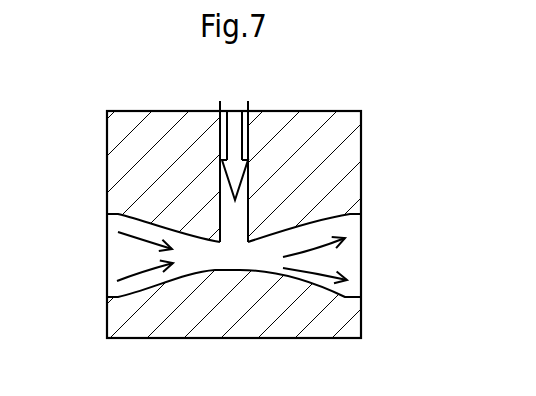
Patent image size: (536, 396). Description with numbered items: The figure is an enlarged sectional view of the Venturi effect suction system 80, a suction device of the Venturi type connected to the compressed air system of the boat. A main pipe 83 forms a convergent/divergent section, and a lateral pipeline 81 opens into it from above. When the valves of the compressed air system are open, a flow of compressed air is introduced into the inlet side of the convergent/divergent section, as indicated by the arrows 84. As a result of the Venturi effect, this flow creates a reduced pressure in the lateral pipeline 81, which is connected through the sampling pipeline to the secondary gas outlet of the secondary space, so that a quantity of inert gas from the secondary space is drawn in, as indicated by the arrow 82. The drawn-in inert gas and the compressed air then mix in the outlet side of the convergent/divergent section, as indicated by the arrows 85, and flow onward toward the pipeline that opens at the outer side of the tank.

The Venturi effect suction system 80 is at (366, 144).
The lateral pipeline 81 is at (229, 200).
The arrow indicating drawn-in inert gas 82 is at (249, 124).
The main pipe 83 is at (204, 268).
The arrows indicating compressed air inflow 84 is at (143, 268).
The arrows indicating mixed outlet flow 85 is at (313, 249).